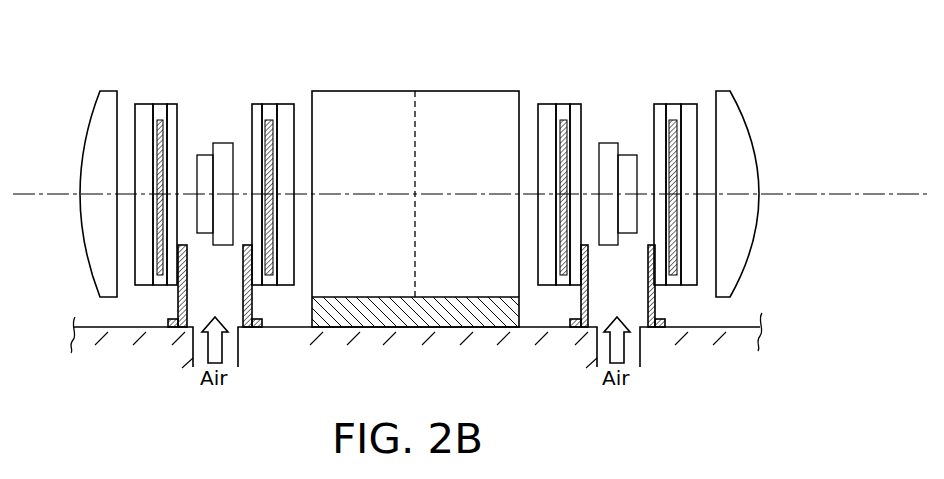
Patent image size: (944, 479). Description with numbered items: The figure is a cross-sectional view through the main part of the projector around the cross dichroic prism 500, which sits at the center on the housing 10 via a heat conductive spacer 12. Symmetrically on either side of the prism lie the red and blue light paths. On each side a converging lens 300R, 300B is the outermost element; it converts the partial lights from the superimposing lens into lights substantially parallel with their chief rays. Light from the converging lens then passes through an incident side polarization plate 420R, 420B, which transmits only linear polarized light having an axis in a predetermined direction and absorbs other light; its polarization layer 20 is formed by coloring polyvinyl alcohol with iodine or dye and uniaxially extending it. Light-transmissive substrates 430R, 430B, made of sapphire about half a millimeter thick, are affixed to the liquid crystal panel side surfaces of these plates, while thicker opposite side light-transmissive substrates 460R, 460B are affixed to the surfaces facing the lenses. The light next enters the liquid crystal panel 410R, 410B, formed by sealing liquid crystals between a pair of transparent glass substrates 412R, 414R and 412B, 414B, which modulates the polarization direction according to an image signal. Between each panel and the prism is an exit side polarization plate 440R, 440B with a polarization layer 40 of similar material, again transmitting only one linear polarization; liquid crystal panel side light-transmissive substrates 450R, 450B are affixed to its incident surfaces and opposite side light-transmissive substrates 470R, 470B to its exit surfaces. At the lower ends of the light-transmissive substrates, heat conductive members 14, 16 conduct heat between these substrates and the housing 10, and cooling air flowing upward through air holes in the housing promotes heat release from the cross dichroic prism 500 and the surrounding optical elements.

The housing 10 is at (83, 325).
The heat conductive spacer 12 is at (313, 318).
The heat conductive member 14 is at (243, 261).
The heat conductive member 16 is at (188, 303).
The polarization layer 20 is at (413, 173).
The polarization layer 40 is at (414, 173).
The converging lens 300R is at (92, 112).
The converging lens 300B is at (787, 92).
The red light liquid crystal panel 410R is at (212, 133).
The blue light liquid crystal panel 410B is at (621, 133).
The transparent glass substrate 412R is at (200, 153).
The transparent glass substrate 412B is at (608, 142).
The transparent glass substrate 414R is at (218, 142).
The transparent glass substrate 414B is at (632, 153).
The incident side polarization plate 420R is at (159, 95).
The incident side polarization plate 420B is at (673, 95).
The light-transmissive substrate 430R is at (175, 102).
The light-transmissive substrate 430B is at (663, 103).
The exit side polarization plate 440R is at (267, 95).
The exit side polarization plate 440B is at (565, 95).
The light-transmissive substrate 450R is at (257, 102).
The light-transmissive substrate 450B is at (575, 103).
The light-transmissive substrate 460R is at (140, 102).
The light-transmissive substrate 460B is at (692, 103).
The light-transmissive substrate 470R is at (283, 102).
The light-transmissive substrate 470B is at (552, 103).
The cross dichroic prism 500 is at (497, 91).